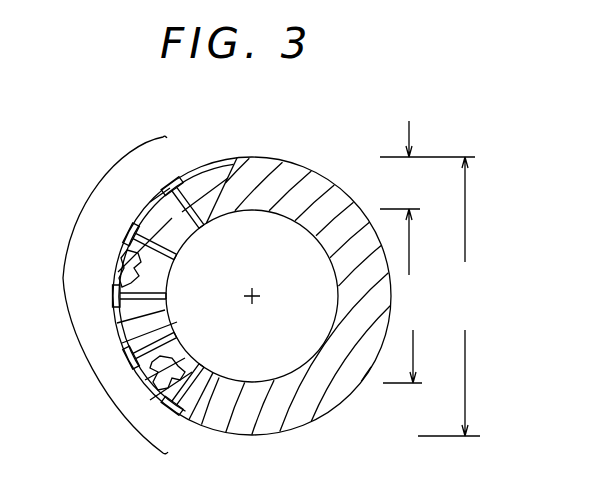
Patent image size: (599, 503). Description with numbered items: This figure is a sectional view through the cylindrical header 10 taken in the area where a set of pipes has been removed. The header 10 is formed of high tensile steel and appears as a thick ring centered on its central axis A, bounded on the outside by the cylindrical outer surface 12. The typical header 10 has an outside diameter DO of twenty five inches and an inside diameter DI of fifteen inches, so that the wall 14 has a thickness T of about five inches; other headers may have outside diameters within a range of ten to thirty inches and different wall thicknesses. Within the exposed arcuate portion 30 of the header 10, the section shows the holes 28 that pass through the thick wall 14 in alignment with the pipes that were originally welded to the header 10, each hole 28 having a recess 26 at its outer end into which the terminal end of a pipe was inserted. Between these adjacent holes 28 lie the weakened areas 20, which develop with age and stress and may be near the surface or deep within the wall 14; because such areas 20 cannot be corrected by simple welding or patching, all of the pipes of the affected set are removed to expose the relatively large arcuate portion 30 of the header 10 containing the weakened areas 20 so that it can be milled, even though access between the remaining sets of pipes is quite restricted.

The header 10 is at (315, 128).
The cylindrical outer surface 12 is at (273, 435).
The wall 14 is at (337, 392).
The weakened areas 20 is at (167, 368).
The recess 26 is at (172, 183).
The hole 28 is at (237, 158).
The arcuate portion 30 is at (95, 295).
The central axis A is at (256, 292).
The thickness T is at (427, 198).
The inside diameter DI is at (402, 335).
The outside diameter DO is at (452, 296).